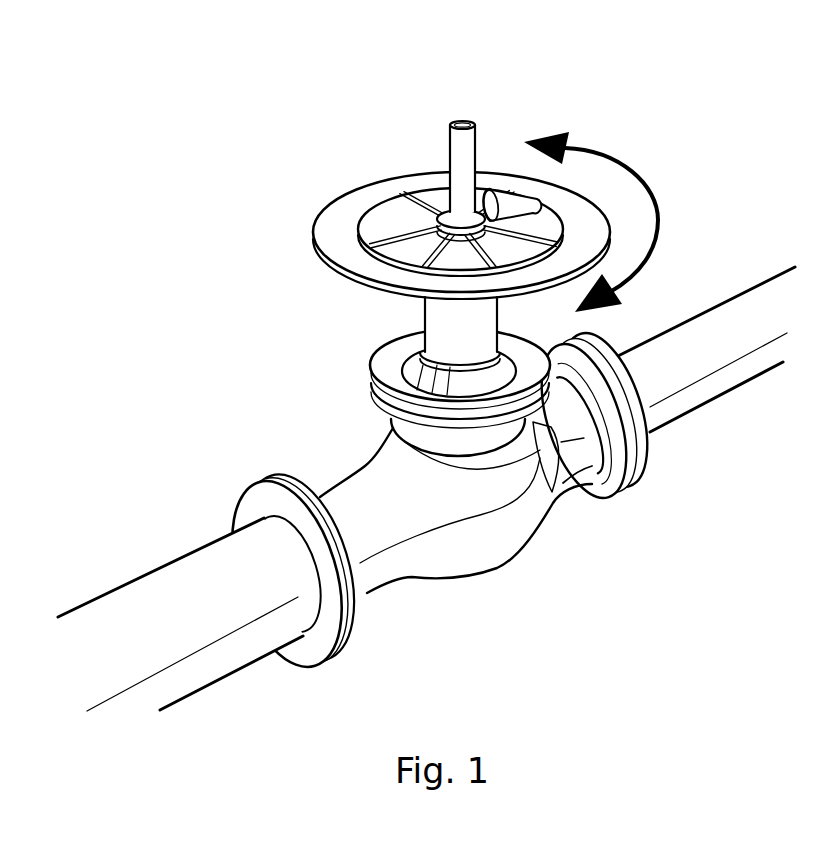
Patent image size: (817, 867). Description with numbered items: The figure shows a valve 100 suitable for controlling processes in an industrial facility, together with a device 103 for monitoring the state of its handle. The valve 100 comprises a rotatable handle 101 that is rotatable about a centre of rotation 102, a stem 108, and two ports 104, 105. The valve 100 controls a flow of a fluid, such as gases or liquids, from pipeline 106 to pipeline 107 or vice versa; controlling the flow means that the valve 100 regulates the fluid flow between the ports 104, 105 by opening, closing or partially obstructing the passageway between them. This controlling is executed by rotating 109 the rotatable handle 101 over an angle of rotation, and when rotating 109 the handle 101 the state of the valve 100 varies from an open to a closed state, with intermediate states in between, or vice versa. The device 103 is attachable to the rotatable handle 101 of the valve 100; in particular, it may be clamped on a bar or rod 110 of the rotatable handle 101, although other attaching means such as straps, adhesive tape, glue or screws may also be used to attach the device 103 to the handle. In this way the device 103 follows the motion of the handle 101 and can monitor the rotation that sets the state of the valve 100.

The valve 100 is at (214, 227).
The rotatable handle 101 is at (348, 213).
The centre of rotation 102 is at (463, 120).
The device 103 is at (530, 197).
The port 104 is at (260, 487).
The port 105 is at (603, 497).
The pipeline 106 is at (110, 607).
The pipeline 107 is at (742, 300).
The stem 108 is at (424, 311).
The rotating 109 is at (653, 192).
The bar or rod 110 is at (382, 212).